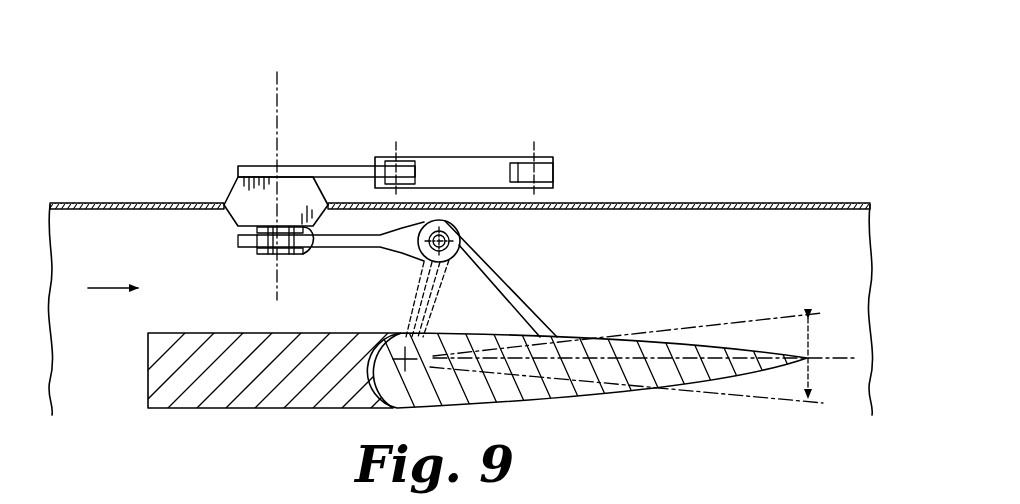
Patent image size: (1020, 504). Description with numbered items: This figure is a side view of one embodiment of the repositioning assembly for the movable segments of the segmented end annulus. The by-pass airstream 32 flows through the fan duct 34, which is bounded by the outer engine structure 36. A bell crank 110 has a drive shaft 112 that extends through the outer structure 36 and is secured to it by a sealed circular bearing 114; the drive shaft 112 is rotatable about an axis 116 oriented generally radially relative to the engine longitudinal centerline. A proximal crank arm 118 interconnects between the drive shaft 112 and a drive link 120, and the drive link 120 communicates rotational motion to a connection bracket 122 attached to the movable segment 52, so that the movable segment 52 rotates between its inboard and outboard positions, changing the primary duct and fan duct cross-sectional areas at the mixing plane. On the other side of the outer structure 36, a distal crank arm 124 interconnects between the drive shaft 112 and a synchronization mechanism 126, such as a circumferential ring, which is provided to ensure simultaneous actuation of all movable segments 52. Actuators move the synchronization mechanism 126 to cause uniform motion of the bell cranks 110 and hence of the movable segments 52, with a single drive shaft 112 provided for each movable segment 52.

The secondary or by-pass airstream 32 is at (104, 288).
The fan duct 34 is at (95, 218).
The outer engine structure 36 is at (134, 204).
The movable segment 52 is at (558, 337).
The bell crank 110 is at (350, 185).
The drive shaft 112 is at (236, 231).
The sealed circular bearing 114 is at (229, 212).
The axis 116 is at (277, 99).
The proximal crank arm 118 is at (248, 241).
The drive link 120 is at (361, 247).
The connection bracket 122 is at (490, 299).
The distal crank arm 124 is at (298, 166).
The synchronization mechanism 126 is at (450, 148).